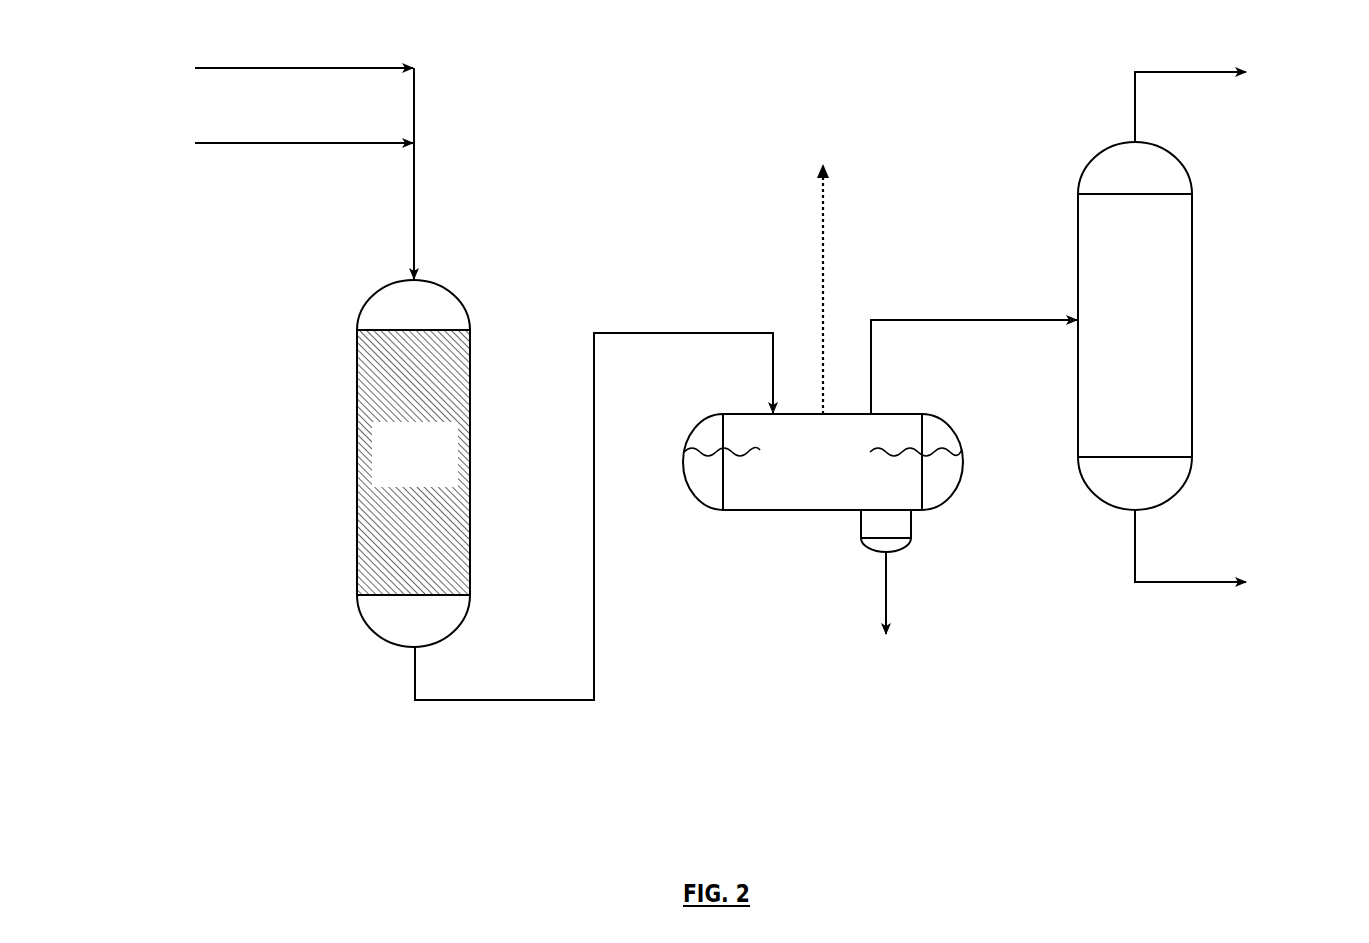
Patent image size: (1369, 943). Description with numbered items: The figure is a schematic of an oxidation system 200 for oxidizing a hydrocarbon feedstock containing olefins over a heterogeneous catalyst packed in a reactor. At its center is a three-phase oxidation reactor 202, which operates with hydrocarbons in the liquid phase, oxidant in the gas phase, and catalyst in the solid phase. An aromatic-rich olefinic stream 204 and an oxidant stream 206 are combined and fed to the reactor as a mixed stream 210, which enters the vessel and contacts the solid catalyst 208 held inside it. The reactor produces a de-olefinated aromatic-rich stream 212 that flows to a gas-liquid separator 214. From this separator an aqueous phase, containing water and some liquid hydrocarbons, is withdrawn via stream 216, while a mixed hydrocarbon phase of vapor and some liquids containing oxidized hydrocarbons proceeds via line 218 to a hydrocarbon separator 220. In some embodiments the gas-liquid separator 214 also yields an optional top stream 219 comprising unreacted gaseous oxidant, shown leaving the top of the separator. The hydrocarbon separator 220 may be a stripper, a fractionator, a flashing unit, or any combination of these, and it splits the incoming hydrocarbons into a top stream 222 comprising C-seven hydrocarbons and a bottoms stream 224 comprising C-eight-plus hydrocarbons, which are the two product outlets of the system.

The oxidation system 200 is at (1150, 854).
The three-phase oxidation reactor 202 is at (413, 462).
The aromatic-rich olefinic stream 204 is at (278, 54).
The oxidant stream 206 is at (278, 142).
The solid catalyst 208 is at (357, 374).
The mixed stream 210 is at (436, 173).
The de-olefinated aromatic-rich stream 212 is at (594, 539).
The gas-liquid separator 214 is at (823, 483).
The aqueous phase stream 216 is at (854, 593).
The line 218 is at (974, 345).
The top stream 219 is at (846, 289).
The hydrocarbon separator 220 is at (1135, 326).
The top stream 222 is at (1215, 89).
The bottoms stream 224 is at (1226, 563).